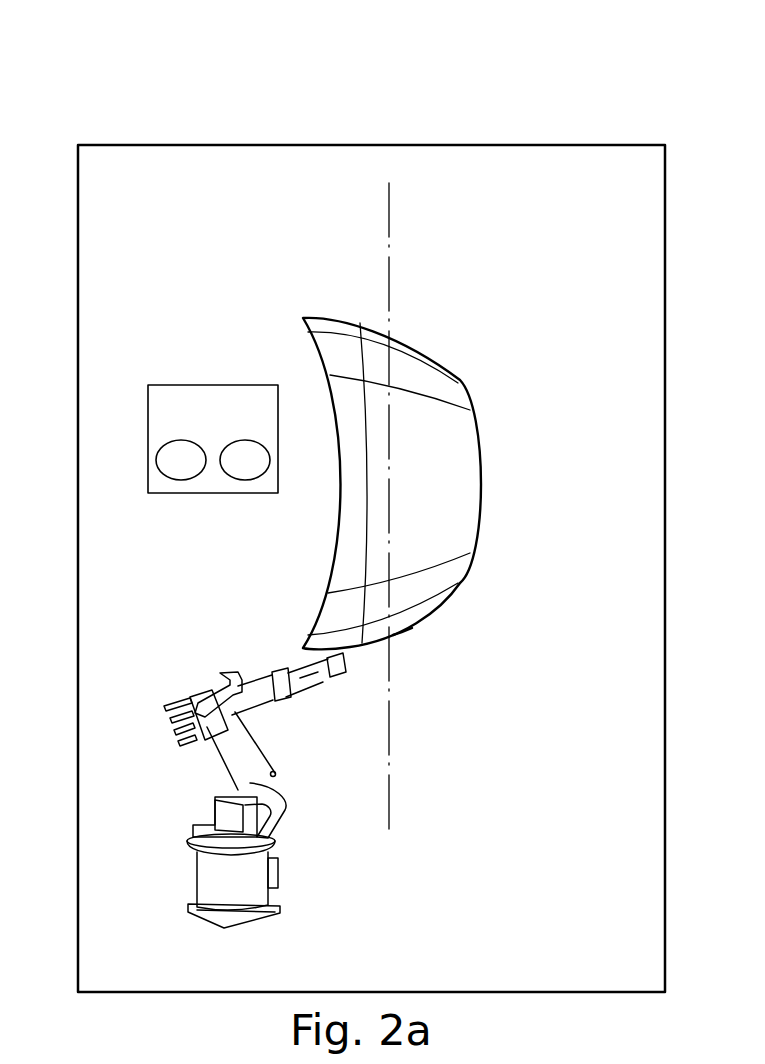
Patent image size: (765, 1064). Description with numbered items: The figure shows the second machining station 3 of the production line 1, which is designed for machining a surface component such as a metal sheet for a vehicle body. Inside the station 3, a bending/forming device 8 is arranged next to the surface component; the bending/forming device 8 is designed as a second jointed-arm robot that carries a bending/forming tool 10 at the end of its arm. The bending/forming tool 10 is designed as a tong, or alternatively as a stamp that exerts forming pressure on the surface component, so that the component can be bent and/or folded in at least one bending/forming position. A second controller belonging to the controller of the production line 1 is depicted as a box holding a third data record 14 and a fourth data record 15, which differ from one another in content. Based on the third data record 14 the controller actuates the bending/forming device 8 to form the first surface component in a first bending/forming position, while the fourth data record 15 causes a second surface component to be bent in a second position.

The production line 1 is at (85, 112).
The second machining station 3 is at (190, 197).
The bending/forming device 8 is at (263, 792).
The bending/forming tool 10 is at (320, 670).
The third data record 14 is at (181, 460).
The fourth data record 15 is at (245, 460).